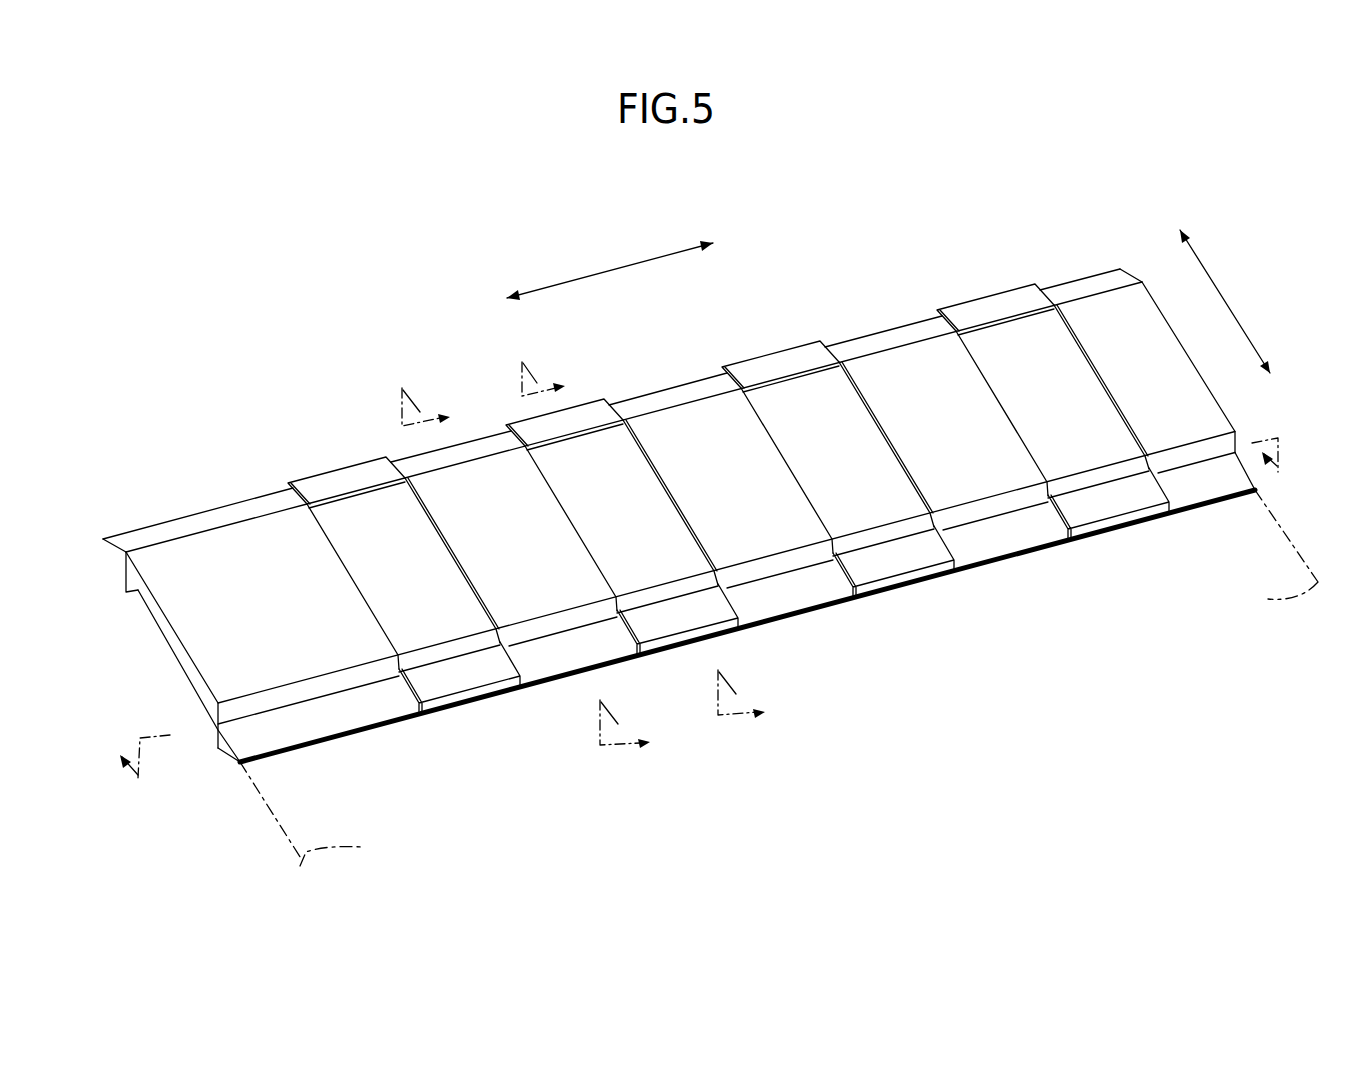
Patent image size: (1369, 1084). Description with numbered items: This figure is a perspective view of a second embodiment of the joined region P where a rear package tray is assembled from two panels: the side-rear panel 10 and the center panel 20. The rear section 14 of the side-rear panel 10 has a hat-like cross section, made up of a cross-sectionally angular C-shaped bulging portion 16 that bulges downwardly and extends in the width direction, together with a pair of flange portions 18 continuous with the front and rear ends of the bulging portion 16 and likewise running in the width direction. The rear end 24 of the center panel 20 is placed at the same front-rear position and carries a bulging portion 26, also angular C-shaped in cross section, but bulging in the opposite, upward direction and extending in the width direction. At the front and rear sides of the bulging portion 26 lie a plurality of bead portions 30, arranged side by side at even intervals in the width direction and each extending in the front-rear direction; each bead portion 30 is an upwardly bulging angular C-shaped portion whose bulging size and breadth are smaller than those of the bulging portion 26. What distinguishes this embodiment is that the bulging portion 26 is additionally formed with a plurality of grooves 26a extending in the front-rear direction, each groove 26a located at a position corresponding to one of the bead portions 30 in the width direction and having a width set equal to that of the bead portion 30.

The joined region P is at (945, 188).
The side-rear panel 10 is at (728, 660).
The rear section 14 is at (200, 737).
The bulging portion 16 is at (153, 647).
The flange portions 18 is at (108, 550).
The center panel 20 is at (680, 515).
The rear end 24 is at (262, 566).
The bulging portion 26 is at (177, 562).
The grooves 26a is at (395, 583).
The bead portions 30 is at (338, 476).